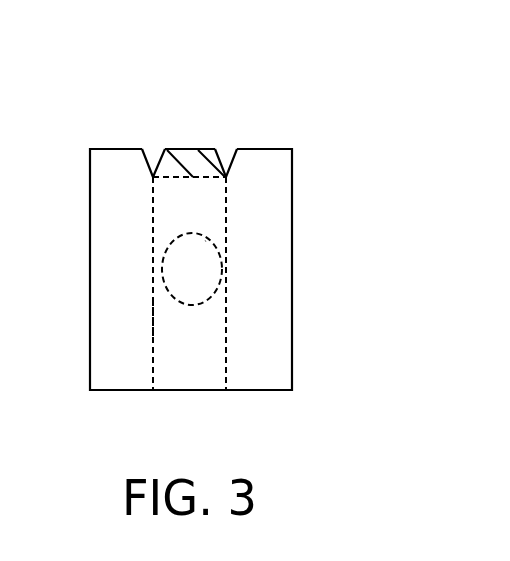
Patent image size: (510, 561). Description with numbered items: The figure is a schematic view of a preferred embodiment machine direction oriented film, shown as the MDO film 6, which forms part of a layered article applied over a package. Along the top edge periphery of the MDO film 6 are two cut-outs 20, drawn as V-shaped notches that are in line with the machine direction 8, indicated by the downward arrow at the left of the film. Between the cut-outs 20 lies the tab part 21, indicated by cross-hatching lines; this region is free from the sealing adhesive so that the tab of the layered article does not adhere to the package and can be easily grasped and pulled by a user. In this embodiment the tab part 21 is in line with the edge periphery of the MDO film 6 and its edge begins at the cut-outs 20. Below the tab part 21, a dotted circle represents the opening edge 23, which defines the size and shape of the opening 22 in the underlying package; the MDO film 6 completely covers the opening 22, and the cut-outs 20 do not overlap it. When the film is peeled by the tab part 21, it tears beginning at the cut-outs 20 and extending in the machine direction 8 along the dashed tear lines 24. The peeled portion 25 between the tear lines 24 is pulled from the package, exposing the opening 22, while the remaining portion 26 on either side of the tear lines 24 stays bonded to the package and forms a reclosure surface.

The MDO film 6 is at (304, 116).
The machine direction 8 is at (72, 320).
The cut-outs 20 is at (226, 140).
The tab part 21 is at (198, 149).
The opening 22 is at (197, 268).
The opening edge 23 is at (205, 240).
The tear lines 24 is at (217, 355).
The peeled portion 25 is at (173, 340).
The remaining portion 26 is at (97, 353).